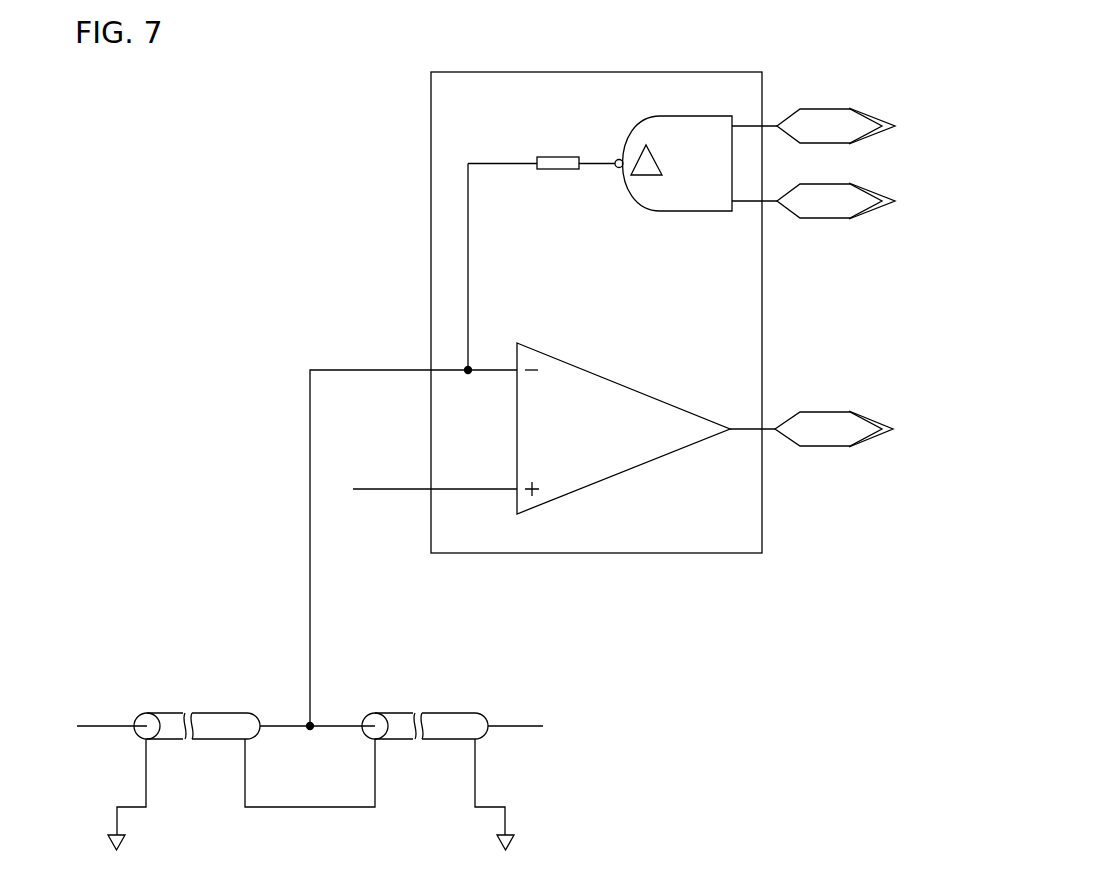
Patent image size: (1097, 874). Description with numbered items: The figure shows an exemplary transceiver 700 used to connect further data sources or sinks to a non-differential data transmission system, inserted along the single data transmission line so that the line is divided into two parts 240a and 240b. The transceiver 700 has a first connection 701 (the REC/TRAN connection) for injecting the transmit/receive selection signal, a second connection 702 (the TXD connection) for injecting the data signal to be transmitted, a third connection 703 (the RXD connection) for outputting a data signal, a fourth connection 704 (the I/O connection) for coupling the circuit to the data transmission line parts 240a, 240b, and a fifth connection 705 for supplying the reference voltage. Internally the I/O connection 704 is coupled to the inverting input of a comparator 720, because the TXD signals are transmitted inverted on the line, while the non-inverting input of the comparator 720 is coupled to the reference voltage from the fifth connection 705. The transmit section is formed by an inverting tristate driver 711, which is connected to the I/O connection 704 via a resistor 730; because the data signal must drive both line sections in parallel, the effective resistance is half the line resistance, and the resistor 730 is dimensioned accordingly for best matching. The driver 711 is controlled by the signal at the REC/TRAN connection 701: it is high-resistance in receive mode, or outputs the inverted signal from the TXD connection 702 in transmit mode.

The transceiver 700 is at (640, 71).
The resistor 730 is at (546, 156).
The inverting tristate driver 711 is at (685, 212).
The first connection 701 is at (878, 137).
The second connection 702 is at (873, 213).
The third connection 703 is at (873, 441).
The fourth connection 704 is at (342, 372).
The fifth connection 705 is at (393, 492).
The comparator 720 is at (516, 428).
The data transmission line part 240a is at (212, 743).
The data transmission line part 240b is at (442, 743).